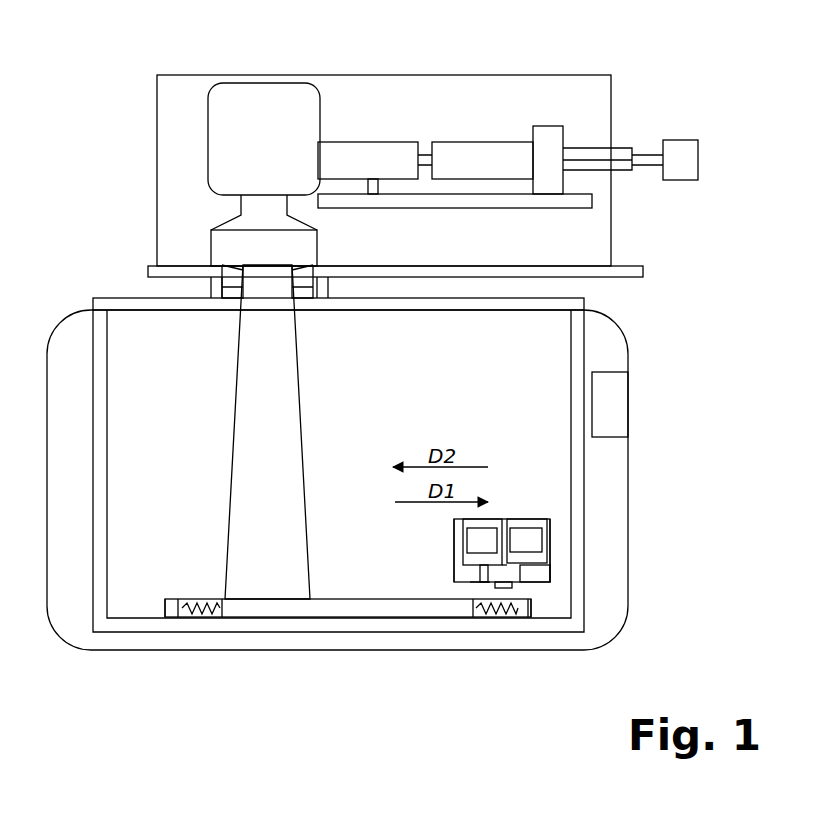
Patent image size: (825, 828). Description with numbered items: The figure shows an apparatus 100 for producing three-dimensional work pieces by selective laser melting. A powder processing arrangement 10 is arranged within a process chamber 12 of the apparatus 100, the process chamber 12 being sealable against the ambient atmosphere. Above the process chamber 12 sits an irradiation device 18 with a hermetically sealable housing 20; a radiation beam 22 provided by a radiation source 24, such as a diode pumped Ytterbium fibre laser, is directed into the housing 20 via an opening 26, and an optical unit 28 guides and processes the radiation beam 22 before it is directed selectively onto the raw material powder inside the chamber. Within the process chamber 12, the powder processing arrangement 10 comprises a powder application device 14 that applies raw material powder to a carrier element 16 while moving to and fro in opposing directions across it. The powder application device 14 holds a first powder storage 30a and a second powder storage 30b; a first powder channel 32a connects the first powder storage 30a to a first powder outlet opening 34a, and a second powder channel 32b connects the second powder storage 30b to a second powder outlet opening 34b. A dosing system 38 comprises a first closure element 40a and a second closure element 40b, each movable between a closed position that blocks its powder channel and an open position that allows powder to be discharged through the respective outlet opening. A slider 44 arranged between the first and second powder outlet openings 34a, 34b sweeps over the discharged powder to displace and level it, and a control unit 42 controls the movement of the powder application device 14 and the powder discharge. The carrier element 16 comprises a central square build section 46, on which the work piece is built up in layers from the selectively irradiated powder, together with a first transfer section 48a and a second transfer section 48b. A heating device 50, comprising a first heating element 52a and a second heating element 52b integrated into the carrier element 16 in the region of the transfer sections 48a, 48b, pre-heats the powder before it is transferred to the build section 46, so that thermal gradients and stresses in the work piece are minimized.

The apparatus 100 is at (718, 227).
The powder processing arrangement 10 is at (498, 450).
The process chamber 12 is at (93, 308).
The powder application device 14 is at (503, 519).
The carrier element 16 is at (168, 600).
The irradiation device 18 is at (670, 112).
The housing 20 is at (611, 75).
The radiation beam 22 is at (593, 170).
The radiation source 24 is at (688, 152).
The opening 26 is at (613, 148).
The optical unit 28 is at (450, 128).
The first powder storage 30a is at (482, 542).
The second powder storage 30b is at (527, 541).
The first powder channel 32a is at (458, 578).
The second powder channel 32b is at (551, 575).
The first powder outlet opening 34a is at (478, 585).
The second powder outlet opening 34b is at (513, 587).
The dosing system 38 is at (505, 573).
The first closure element 40a is at (478, 575).
The second closure element 40b is at (530, 572).
The control unit 42 is at (612, 397).
The slider 44 is at (533, 598).
The build section 46 is at (323, 609).
The first transfer section 48a is at (187, 603).
The second transfer section 48b is at (487, 616).
The heating device 50 is at (430, 635).
The first heating element 52a is at (197, 617).
The second heating element 52b is at (500, 617).